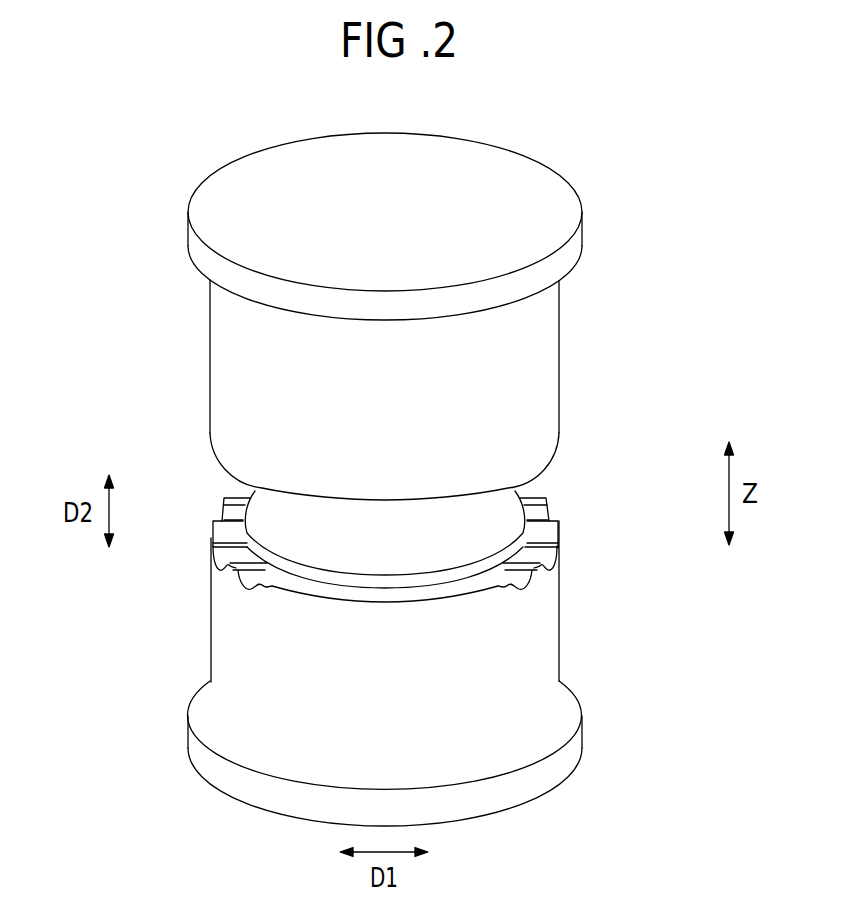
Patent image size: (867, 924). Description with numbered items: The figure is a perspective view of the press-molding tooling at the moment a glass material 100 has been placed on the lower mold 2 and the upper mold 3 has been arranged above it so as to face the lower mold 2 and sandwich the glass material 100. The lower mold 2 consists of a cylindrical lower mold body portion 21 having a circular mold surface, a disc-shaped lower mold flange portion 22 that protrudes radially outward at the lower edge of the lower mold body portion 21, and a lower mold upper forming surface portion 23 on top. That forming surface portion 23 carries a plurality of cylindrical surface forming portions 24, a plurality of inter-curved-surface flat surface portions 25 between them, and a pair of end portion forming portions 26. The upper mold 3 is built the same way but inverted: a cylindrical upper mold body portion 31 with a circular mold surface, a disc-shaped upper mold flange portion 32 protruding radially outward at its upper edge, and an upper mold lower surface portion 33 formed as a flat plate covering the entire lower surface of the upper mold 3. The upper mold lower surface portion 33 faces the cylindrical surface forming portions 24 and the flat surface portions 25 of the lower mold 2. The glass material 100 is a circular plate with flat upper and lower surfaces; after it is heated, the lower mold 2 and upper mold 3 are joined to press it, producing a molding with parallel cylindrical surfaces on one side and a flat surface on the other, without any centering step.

The glass material 100 is at (268, 512).
The lower mold 2 is at (407, 639).
The upper mold 3 is at (418, 286).
The lower mold body portion 21 is at (547, 641).
The lower mold flange portion 22 is at (572, 753).
The lower mold upper forming surface portion 23 is at (545, 493).
The cylindrical surface forming portions 24 is at (550, 557).
The inter-curved-surface flat surface portions 25 is at (213, 535).
The end portion forming portions 26 is at (377, 600).
The upper mold body portion 31 is at (547, 352).
The upper mold flange portion 32 is at (574, 250).
The upper mold lower surface portion 33 is at (527, 472).